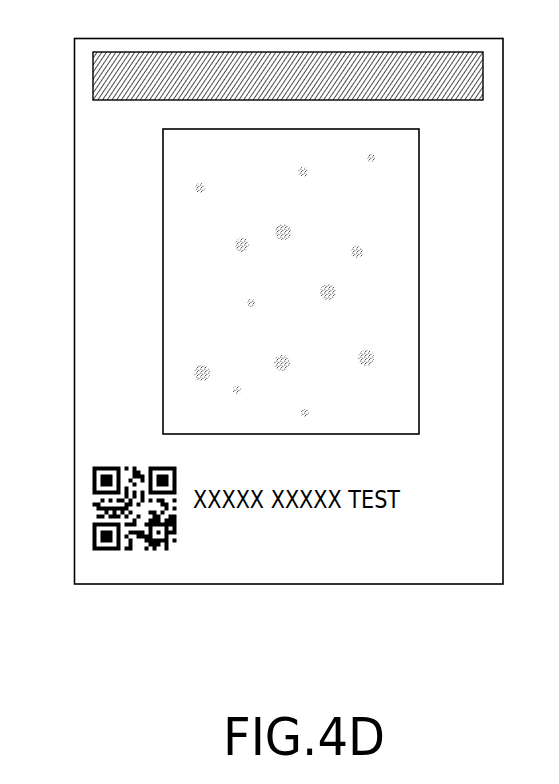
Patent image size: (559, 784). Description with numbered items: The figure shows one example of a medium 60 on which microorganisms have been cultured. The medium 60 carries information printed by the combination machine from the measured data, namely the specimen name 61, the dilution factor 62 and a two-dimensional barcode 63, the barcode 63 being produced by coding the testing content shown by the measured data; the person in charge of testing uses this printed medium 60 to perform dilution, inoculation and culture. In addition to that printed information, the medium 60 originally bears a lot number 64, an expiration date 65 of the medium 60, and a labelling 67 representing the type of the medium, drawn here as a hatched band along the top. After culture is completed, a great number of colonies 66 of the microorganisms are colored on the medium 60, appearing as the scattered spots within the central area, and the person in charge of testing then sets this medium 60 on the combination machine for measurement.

The medium 60 is at (503, 80).
The specimen name 61 is at (125, 588).
The dilution factor 62 is at (170, 588).
The two-dimensional barcode 63 is at (92, 512).
The lot number 64 is at (290, 555).
The expiration date 65 is at (390, 555).
The colonies 66 is at (382, 155).
The labelling 67 is at (463, 52).